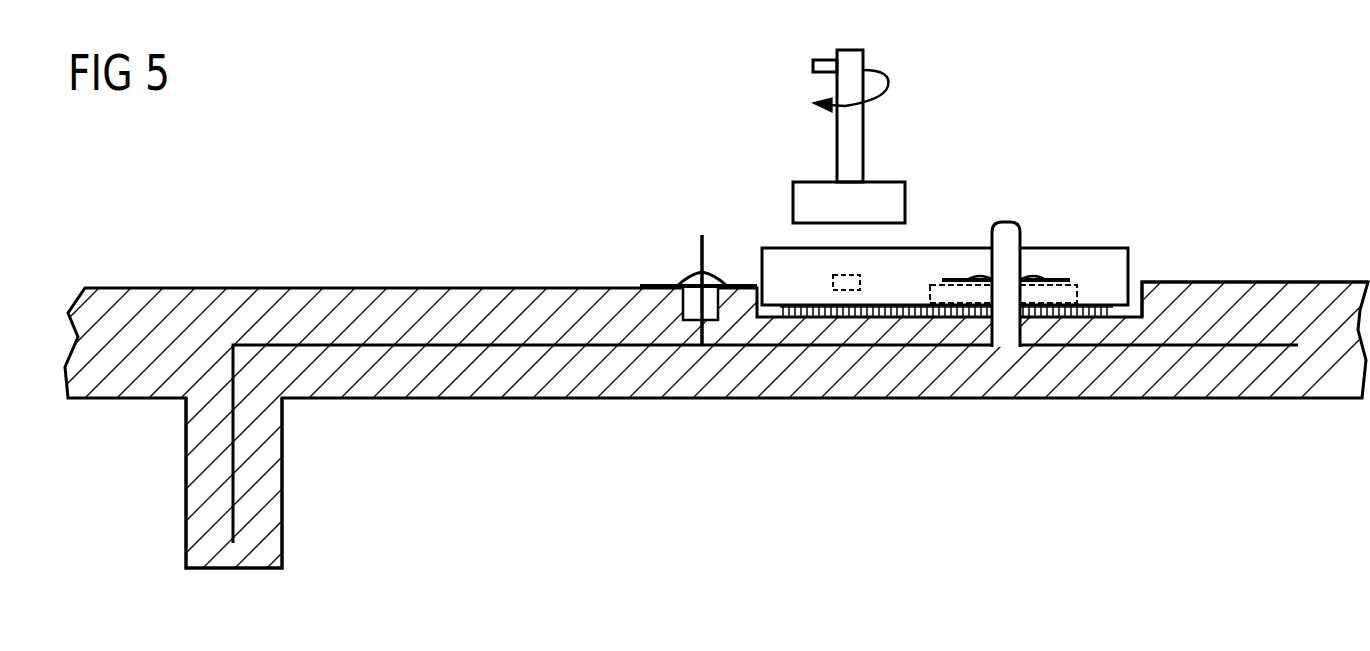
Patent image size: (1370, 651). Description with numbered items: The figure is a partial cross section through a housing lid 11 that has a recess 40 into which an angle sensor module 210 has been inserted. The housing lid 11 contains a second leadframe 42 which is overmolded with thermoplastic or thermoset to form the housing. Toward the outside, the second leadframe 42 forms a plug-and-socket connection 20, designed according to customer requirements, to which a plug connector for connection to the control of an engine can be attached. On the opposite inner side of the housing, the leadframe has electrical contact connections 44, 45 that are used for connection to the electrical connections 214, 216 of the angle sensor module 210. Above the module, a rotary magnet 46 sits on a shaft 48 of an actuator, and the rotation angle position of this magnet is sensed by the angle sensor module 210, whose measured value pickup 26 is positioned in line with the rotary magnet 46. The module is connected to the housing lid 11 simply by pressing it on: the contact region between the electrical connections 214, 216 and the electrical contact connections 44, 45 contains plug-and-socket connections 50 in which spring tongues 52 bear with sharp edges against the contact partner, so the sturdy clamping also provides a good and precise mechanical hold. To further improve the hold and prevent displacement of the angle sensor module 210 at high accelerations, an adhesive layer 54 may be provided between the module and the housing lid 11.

The housing lid 11 is at (345, 302).
The plug-and-socket connection 20 is at (267, 497).
The second leadframe 42 is at (573, 347).
The electrical connection 214 is at (640, 283).
The plug-and-socket connection 50 is at (676, 265).
The electrical contact connection 44 is at (700, 250).
The angle sensor module 210 is at (1108, 243).
The adhesive layer 54 is at (1113, 312).
The measured value pickup 26 is at (840, 273).
The electrical connection 216 is at (968, 277).
The spring tongue 52 is at (1032, 275).
The electrical contact connection 45 is at (1005, 228).
The rotary magnet 46 is at (905, 192).
The shaft 48 is at (848, 130).
The recess 40 is at (1143, 330).